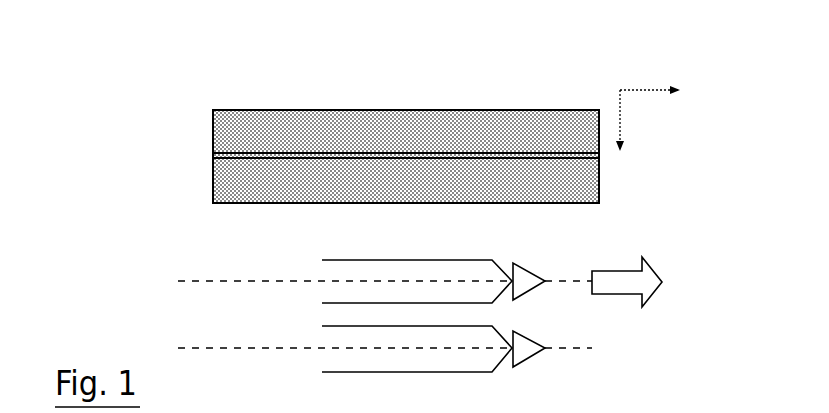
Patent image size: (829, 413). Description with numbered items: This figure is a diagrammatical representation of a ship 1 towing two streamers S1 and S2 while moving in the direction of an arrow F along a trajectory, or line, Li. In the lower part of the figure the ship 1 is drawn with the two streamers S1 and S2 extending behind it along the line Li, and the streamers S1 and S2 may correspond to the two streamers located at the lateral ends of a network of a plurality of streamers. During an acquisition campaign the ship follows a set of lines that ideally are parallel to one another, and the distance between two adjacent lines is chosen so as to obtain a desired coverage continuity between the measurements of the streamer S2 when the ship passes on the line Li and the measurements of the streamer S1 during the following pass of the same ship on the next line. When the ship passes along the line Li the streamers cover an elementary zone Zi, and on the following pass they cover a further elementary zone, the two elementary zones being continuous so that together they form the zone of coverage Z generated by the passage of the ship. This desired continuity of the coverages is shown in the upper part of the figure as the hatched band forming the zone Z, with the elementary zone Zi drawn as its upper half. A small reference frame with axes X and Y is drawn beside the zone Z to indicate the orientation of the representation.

The zone of coverage Z is at (404, 107).
The elementary zone Zi is at (213, 130).
The ship 1 is at (526, 263).
The streamer S2 is at (370, 259).
The streamer S1 is at (362, 325).
The line Li is at (562, 280).
The arrow F is at (628, 271).
The X axis X is at (635, 126).
The Y axis Y is at (652, 72).